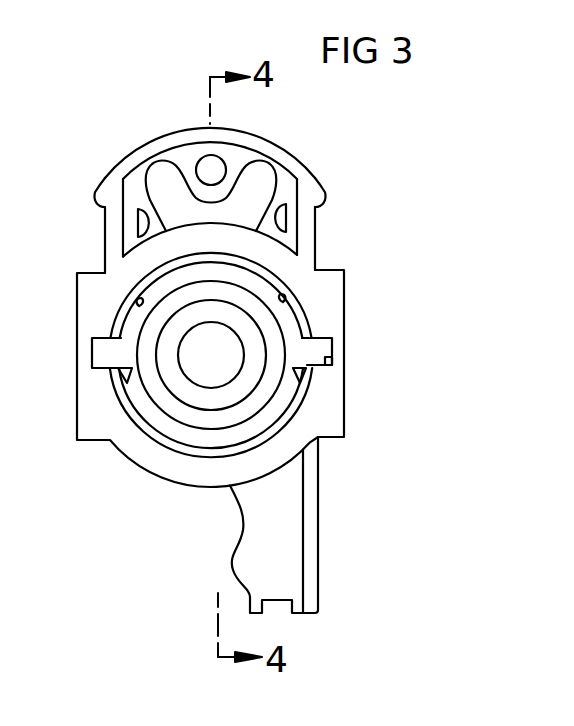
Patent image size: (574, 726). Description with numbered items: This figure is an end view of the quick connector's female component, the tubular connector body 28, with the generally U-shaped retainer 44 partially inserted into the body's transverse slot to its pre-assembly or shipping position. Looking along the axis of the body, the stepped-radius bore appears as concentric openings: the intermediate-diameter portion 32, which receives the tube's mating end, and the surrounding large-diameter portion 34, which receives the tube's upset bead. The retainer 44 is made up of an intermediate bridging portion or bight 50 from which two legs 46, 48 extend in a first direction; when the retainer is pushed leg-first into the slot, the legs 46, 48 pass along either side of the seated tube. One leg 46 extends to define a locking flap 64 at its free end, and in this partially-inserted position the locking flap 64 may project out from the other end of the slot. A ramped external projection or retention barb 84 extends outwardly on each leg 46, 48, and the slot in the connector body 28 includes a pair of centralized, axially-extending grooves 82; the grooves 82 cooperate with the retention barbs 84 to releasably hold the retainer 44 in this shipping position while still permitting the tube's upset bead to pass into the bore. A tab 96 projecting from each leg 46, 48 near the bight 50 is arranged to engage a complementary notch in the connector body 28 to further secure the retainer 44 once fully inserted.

The connector body 28 is at (360, 278).
The intermediate-diameter portion 32 is at (247, 366).
The large-diameter portion 34 is at (158, 432).
The retainer 44 is at (322, 150).
The leg 46 is at (315, 233).
The leg 48 is at (107, 237).
The bight 50 is at (147, 152).
The locking flap 64 is at (317, 552).
The grooves 82 is at (328, 364).
The retention barb 84 is at (94, 360).
The tab 96 is at (94, 204).